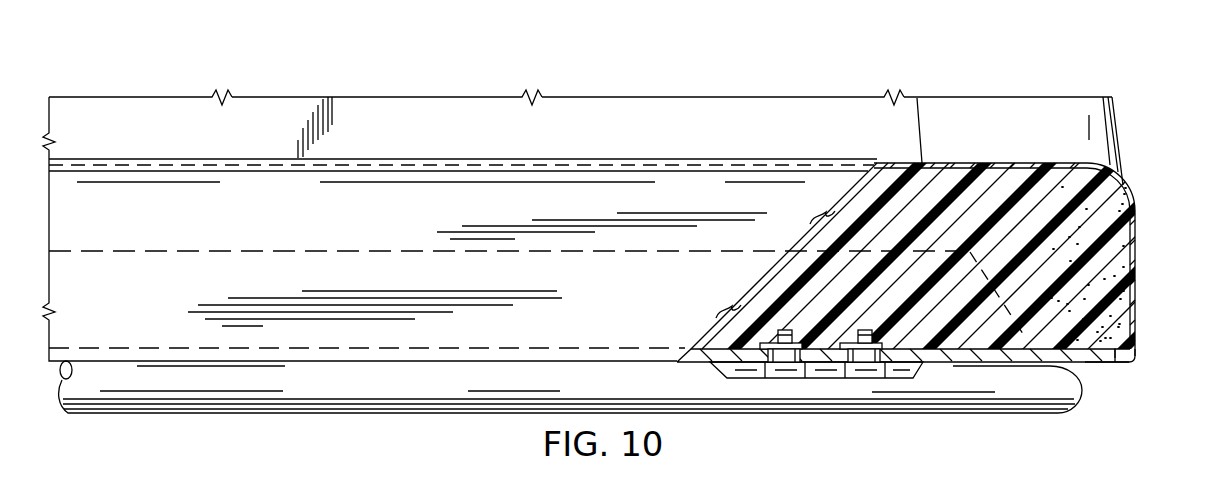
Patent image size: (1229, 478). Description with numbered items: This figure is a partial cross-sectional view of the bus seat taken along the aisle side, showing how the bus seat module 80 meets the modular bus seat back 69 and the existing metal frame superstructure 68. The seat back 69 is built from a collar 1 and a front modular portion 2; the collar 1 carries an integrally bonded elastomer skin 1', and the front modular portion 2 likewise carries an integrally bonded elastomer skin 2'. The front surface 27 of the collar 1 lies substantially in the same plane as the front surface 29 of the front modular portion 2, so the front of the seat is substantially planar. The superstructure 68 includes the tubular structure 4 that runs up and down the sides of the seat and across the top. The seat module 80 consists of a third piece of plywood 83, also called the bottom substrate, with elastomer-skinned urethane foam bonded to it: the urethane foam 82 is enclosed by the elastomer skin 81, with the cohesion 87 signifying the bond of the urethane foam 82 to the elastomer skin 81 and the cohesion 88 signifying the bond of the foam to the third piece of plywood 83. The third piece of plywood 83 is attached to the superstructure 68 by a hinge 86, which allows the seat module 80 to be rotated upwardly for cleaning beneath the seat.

The collar 1 is at (1095, 110).
The integrally bonded elastomer skin 1' is at (1066, 97).
The front modular portion 2 is at (286, 103).
The integrally bonded elastomer skin 2' is at (723, 79).
The tubular structure 4 is at (283, 395).
The front surface 27 is at (965, 107).
The front surface 29 is at (452, 105).
The superstructure 68 is at (473, 420).
The bus seat back 69 is at (178, 80).
The bus seat module 80 is at (551, 141).
The elastomer skin 81 is at (1136, 228).
The urethane foam 82 is at (1110, 218).
The third piece of plywood 83 is at (1108, 363).
The hinge 86 is at (827, 370).
The cohesion of the urethane foam to the elastomer skin 87 is at (1131, 256).
The cohesion of the urethane foam to the third piece of plywood 88 is at (1112, 337).